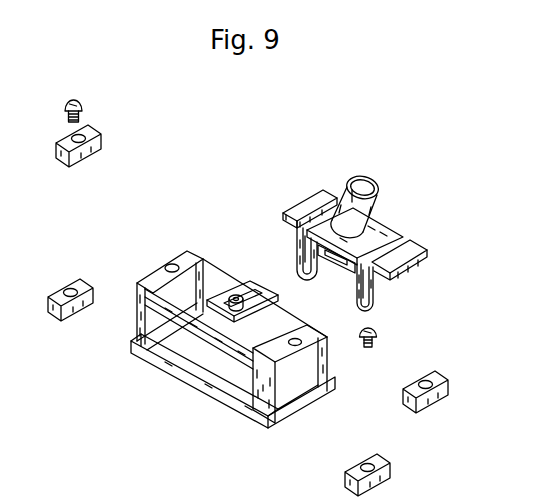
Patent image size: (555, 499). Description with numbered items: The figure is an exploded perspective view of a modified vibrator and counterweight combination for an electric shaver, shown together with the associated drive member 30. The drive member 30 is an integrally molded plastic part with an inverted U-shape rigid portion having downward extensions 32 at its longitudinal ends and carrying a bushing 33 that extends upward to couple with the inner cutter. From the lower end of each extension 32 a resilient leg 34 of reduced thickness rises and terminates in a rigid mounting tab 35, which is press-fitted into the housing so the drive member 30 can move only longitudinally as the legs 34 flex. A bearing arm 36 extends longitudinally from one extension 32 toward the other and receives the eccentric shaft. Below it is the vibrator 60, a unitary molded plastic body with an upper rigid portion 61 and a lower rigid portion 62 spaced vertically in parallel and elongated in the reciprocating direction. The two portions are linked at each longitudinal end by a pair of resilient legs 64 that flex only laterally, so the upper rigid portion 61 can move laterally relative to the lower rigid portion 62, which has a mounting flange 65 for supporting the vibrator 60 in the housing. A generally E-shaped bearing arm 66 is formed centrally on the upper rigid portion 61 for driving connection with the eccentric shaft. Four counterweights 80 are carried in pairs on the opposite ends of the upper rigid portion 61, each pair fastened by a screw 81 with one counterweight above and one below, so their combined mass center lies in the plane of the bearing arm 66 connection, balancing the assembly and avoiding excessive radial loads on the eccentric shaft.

The drive member 30 is at (365, 235).
The downward extensions 32 is at (312, 272).
The bushing 33 is at (358, 183).
The resilient legs 34 is at (296, 233).
The mounting tabs 35 is at (304, 207).
The bearing arm 36 is at (337, 277).
The vibrator 60 is at (229, 343).
The upper rigid portion 61 is at (200, 332).
The lower rigid portion 62 is at (215, 385).
The resilient legs 64 is at (142, 328).
The mounting flange 65 is at (230, 404).
The bearing arm 66 is at (247, 280).
The counterweights 80 is at (92, 130).
The screw 81 is at (82, 100).